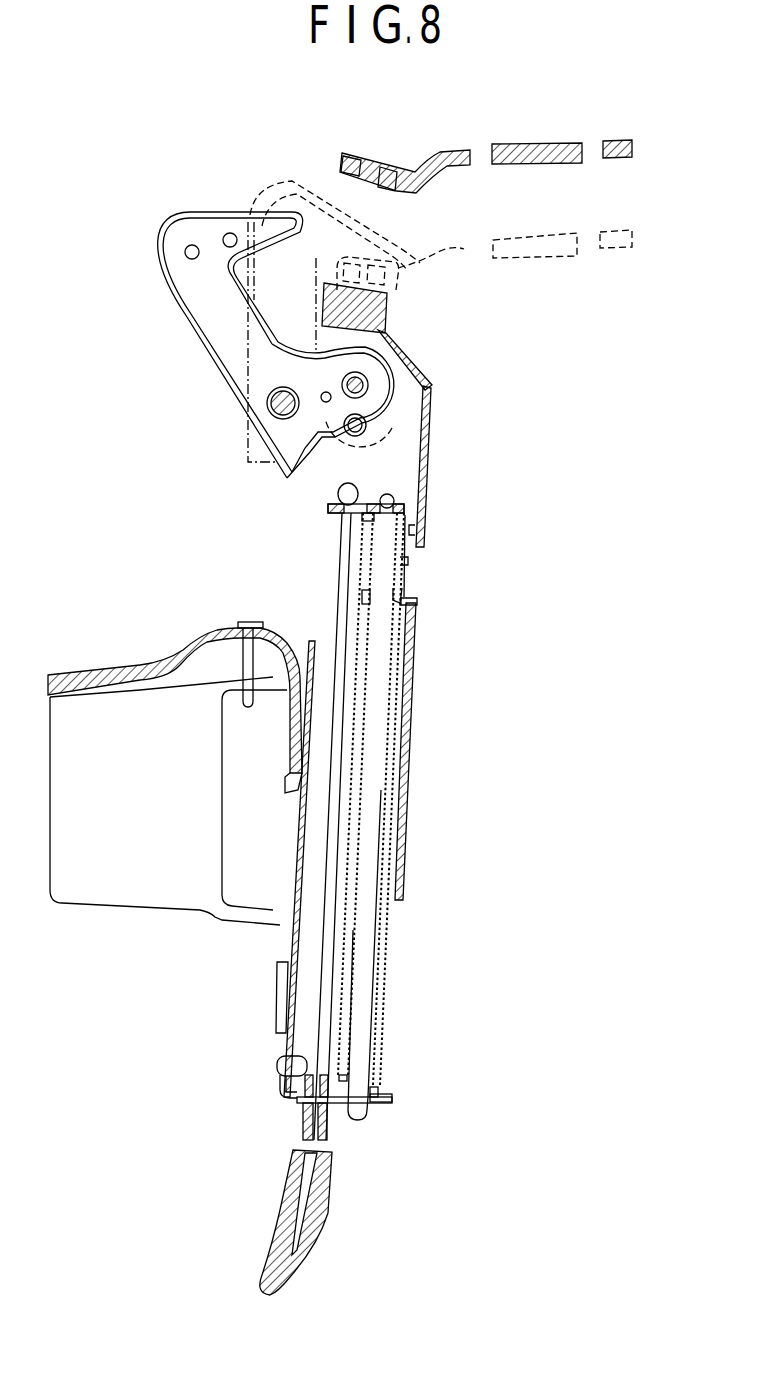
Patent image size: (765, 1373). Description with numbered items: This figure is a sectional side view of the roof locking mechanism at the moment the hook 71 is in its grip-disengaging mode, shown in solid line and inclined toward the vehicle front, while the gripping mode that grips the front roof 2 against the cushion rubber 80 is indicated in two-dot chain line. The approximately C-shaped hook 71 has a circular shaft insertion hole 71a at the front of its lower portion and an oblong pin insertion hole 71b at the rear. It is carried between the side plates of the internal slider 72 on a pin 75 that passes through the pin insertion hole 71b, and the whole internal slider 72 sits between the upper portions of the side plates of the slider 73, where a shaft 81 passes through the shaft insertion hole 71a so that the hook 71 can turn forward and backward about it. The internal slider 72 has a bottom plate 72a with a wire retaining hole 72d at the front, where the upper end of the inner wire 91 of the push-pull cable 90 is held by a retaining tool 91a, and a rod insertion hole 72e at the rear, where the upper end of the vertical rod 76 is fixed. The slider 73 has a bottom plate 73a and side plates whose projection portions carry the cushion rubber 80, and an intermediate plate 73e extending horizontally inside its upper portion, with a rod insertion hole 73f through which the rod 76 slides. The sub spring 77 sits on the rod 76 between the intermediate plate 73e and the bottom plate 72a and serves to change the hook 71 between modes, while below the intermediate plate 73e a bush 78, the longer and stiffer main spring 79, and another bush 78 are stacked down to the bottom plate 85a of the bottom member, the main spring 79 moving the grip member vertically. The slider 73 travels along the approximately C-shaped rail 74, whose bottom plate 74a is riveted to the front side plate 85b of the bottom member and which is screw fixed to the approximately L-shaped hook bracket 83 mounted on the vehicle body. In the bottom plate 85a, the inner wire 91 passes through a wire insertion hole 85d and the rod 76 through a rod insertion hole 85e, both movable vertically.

The front roof 2 is at (464, 247).
The hook 71 is at (265, 195).
The shaft insertion hole 71a is at (268, 408).
The pin insertion hole 71b is at (388, 360).
The internal slider 72 is at (331, 506).
The bottom plate 72a is at (395, 504).
The wire retaining hole 72d is at (348, 516).
The rod insertion hole 72e is at (413, 530).
The slider 73 is at (428, 450).
The bottom plate 73a is at (413, 760).
The intermediate plate 73e is at (362, 598).
The rod insertion hole 73f is at (405, 596).
The rail 74 is at (292, 934).
The bottom plate 74a is at (283, 958).
The pin 75 is at (372, 387).
The rod 76 is at (382, 940).
The sub spring 77 is at (408, 560).
The bush 78 is at (412, 606).
The main spring 79 is at (380, 1007).
The cushion rubber 80 is at (388, 296).
The shaft 81 is at (283, 418).
The hook bracket 83 is at (101, 672).
The bottom plate 85a is at (382, 1104).
The front side plate 85b is at (288, 1085).
The wire insertion hole 85d is at (303, 1100).
The rod insertion hole 85e is at (340, 1105).
The push-pull cable 90 is at (281, 1241).
The inner wire 91 is at (340, 598).
The retaining tool 91a is at (338, 495).